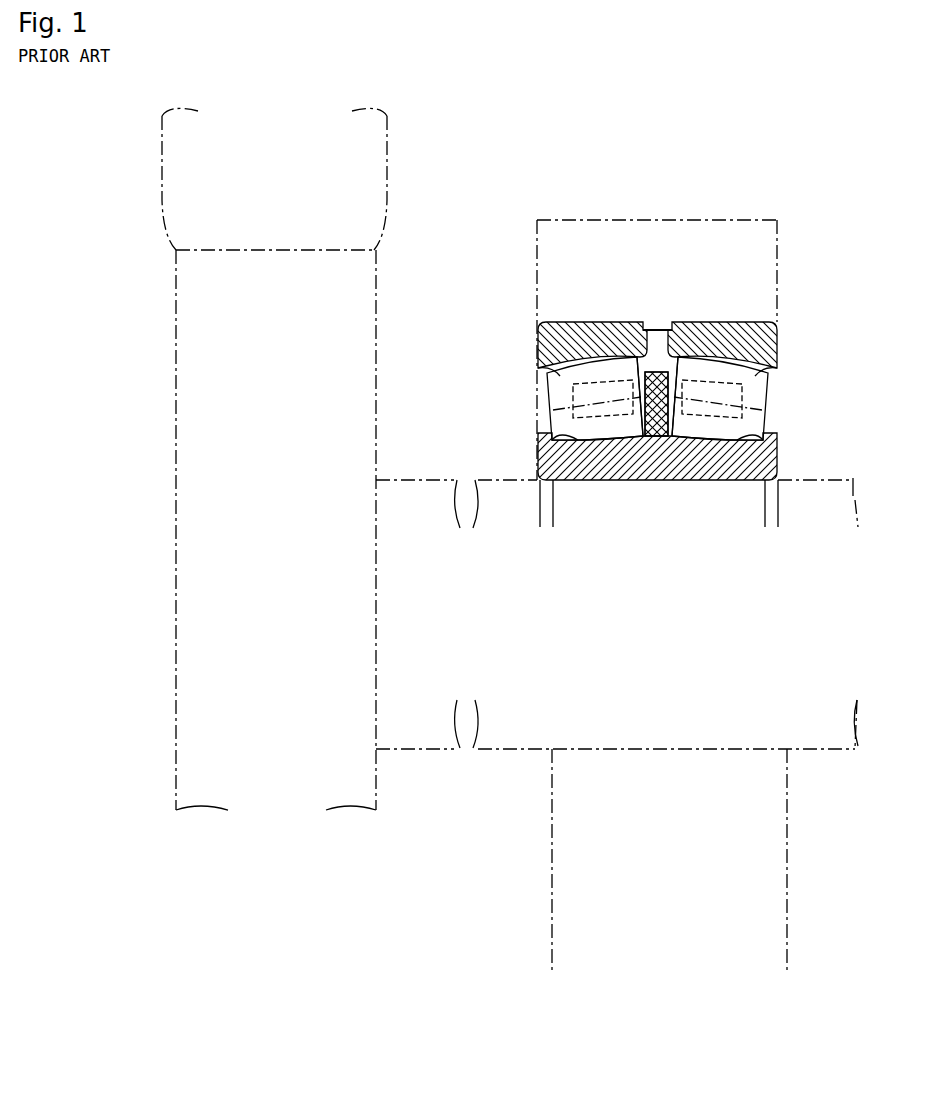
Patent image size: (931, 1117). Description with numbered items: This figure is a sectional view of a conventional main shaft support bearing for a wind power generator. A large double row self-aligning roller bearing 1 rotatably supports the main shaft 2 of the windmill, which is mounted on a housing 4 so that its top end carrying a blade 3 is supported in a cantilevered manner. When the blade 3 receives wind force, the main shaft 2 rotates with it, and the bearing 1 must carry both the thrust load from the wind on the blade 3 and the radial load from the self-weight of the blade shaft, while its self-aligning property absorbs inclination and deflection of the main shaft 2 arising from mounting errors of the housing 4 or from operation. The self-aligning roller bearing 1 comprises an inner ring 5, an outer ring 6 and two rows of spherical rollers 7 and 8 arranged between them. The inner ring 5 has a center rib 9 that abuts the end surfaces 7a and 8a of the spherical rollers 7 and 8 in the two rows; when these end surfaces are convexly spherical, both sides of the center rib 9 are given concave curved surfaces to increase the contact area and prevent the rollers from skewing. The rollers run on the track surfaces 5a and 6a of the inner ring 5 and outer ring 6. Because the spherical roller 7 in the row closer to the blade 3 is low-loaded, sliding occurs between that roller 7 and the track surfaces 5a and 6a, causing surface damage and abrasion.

The self-aligning roller bearing 1 is at (729, 301).
The main shaft 2 is at (423, 478).
The blade 3 is at (370, 164).
The housing 4 is at (574, 237).
The inner ring 5 is at (762, 463).
The track surface of the inner ring 5a is at (553, 427).
The outer ring 6 is at (549, 343).
The track surface of the outer ring 6a is at (748, 376).
The spherical roller 7 is at (559, 392).
The end surface of spherical roller 7a is at (654, 356).
The spherical roller 8 is at (755, 392).
The end surface of spherical roller 8a is at (661, 356).
The center rib 9 is at (660, 425).